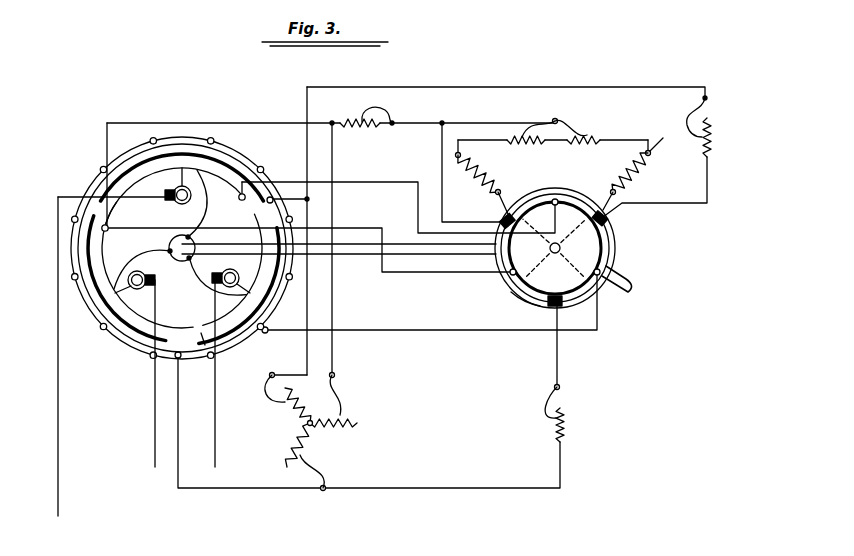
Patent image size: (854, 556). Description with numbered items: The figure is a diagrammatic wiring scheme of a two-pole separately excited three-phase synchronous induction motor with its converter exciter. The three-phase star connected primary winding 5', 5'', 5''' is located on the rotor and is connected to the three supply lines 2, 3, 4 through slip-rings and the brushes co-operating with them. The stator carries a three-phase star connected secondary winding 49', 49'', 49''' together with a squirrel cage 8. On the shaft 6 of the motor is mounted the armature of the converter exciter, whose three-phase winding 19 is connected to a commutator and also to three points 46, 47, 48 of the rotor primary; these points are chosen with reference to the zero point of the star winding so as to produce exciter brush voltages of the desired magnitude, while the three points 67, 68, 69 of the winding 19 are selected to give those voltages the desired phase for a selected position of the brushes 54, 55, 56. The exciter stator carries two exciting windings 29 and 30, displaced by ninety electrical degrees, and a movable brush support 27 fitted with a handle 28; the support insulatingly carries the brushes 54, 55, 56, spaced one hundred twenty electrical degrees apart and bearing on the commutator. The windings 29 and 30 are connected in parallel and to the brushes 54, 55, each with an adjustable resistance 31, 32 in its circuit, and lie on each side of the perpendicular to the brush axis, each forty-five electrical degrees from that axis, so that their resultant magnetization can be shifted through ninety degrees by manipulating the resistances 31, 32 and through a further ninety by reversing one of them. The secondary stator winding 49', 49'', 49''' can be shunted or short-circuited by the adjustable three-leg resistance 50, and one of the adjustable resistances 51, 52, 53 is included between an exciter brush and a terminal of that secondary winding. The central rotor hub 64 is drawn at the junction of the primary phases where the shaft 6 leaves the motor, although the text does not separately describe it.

The supply 2 is at (63, 368).
The supply 3 is at (151, 384).
The supply 4 is at (214, 383).
The primary winding 5' is at (174, 176).
The primary winding 5'' is at (242, 227).
The primary winding 5''' is at (147, 292).
The shaft 6 is at (358, 257).
The squirrel cage 8 is at (90, 183).
The three-phase winding 19 is at (610, 257).
The movable brush support 27 is at (520, 296).
The handle 28 is at (636, 288).
The exciting winding 29 is at (640, 182).
The exciting winding 30 is at (498, 164).
The adjustable resistance 31 is at (590, 128).
The adjustable resistance 32 is at (517, 136).
The point of the primary 46 is at (110, 232).
The point of the primary 47 is at (240, 201).
The point of the primary 48 is at (203, 340).
The secondary stator winding 49' is at (182, 145).
The secondary stator winding 49'' is at (250, 294).
The secondary stator winding 49''' is at (119, 299).
The adjustable three leg resistance 50 is at (321, 427).
The adjustable resistance 51 is at (367, 130).
The adjustable resistance 52 is at (714, 143).
The adjustable resistance 53 is at (578, 422).
The brush 54 is at (500, 218).
The brush 55 is at (608, 222).
The brush 56 is at (564, 306).
The rotor hub 64 is at (179, 266).
The point of the winding 67 is at (525, 264).
The point of the winding 68 is at (565, 211).
The point of the winding 69 is at (587, 265).